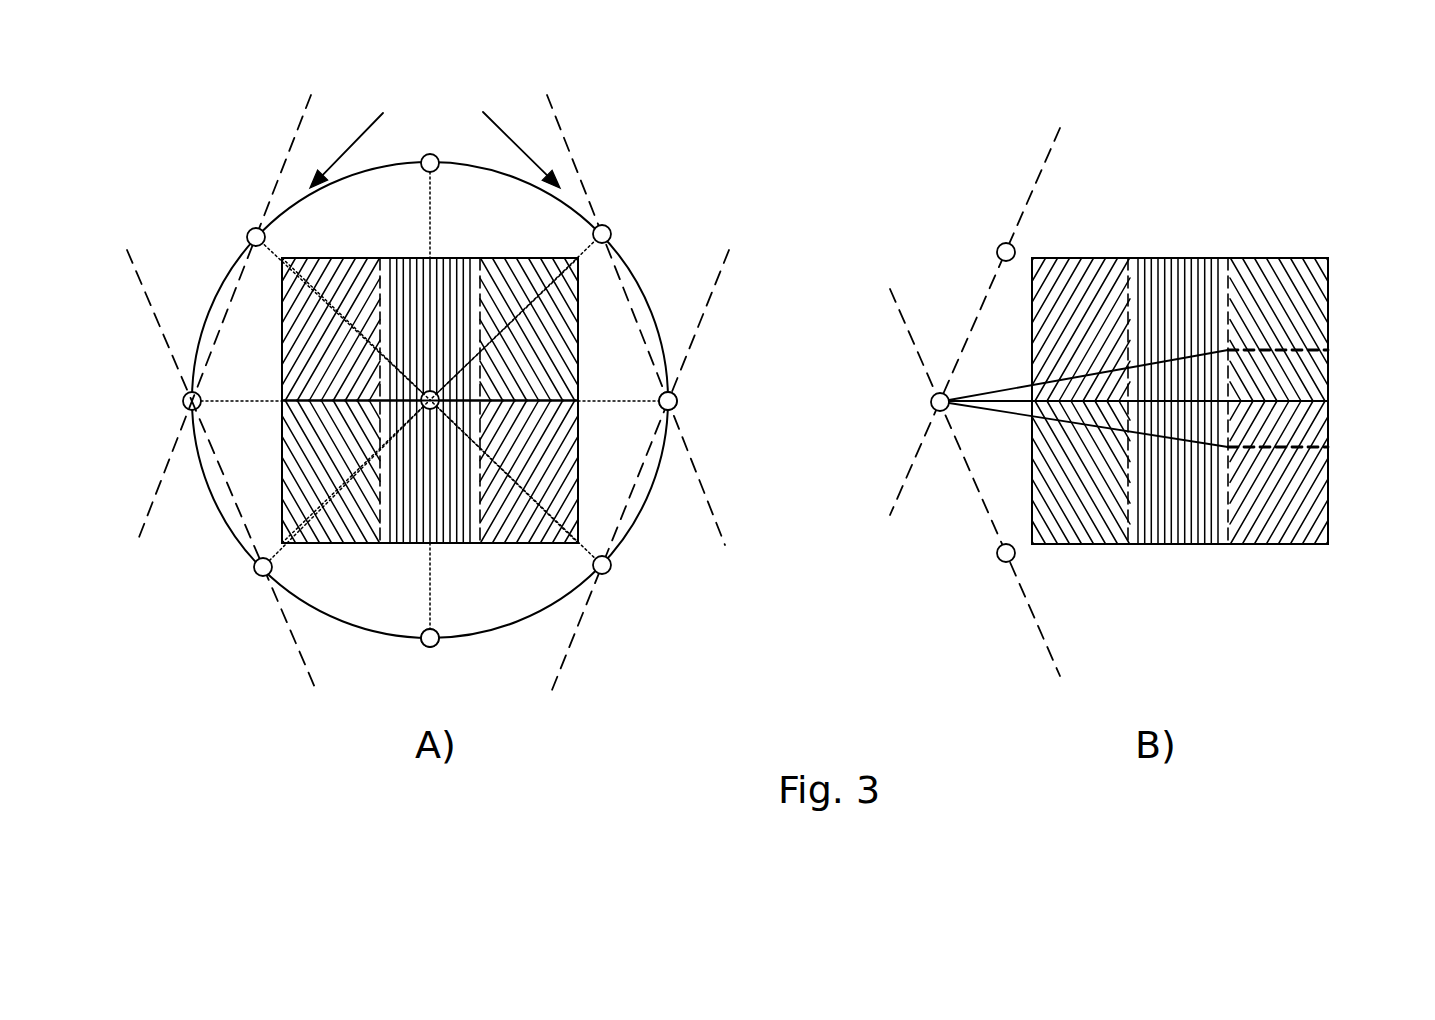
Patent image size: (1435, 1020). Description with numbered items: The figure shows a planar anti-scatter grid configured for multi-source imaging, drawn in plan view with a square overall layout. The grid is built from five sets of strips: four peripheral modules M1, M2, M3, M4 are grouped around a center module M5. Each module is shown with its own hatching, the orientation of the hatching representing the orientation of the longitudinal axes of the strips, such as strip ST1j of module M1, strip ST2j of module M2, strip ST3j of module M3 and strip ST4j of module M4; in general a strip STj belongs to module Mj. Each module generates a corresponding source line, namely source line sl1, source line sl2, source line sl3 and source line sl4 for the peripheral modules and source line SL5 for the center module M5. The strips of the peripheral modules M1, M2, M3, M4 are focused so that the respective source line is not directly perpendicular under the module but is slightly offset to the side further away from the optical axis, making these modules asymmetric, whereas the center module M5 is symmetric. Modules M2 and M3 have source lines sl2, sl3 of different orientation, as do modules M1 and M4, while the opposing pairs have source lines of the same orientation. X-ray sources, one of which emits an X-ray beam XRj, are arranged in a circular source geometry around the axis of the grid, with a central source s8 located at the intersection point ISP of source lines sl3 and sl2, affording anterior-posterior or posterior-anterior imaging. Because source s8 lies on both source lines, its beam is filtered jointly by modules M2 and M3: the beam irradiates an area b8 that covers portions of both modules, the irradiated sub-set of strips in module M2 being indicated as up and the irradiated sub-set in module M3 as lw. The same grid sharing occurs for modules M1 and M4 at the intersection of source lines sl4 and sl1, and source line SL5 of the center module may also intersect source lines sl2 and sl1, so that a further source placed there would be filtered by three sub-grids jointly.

The X-ray beam XRj is at (430, 138).
The source line sl1 is at (580, 632).
The source line sl2 is at (238, 565).
The source line sl3 is at (268, 208).
The source line sl4 is at (562, 140).
The ASG module M1 is at (334, 258).
The ASG module M2 is at (545, 258).
The ASG module M3 is at (577, 445).
The ASG module M4 is at (330, 543).
The center ASG module M5 is at (455, 543).
The source line SL5 is at (433, 662).
The strip ST1j is at (295, 322).
The strip ST2j is at (560, 323).
The strip ST3j is at (577, 480).
The strip ST4j is at (285, 477).
The strip STj is at (422, 543).
The intersection point ISP is at (943, 390).
The X-ray source s8 is at (919, 402).
The irradiated area b8 is at (1159, 398).
The irradiated strip sub-set up is at (1296, 364).
The irradiated strip sub-set lw is at (1297, 420).